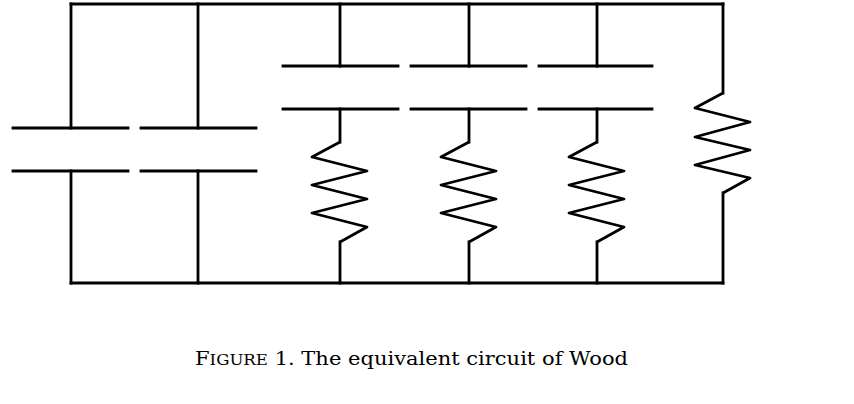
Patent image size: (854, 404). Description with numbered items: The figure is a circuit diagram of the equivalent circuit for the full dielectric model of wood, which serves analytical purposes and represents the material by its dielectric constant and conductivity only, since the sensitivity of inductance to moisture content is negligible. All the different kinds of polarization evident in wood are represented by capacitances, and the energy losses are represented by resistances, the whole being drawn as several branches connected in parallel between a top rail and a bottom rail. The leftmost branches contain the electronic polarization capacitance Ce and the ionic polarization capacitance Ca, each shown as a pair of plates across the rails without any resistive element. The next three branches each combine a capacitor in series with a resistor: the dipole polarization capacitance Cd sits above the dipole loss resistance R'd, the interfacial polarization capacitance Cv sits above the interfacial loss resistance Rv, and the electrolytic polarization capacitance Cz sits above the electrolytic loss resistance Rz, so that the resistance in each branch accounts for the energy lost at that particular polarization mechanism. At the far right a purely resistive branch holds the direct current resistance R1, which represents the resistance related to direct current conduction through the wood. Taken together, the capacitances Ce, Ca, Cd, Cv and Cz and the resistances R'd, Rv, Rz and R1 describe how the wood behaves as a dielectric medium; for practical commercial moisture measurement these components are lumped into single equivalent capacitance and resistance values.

The electronic polarization capacitance Ce is at (70, 127).
The ionic polarization capacitance Ca is at (198, 127).
The dipole polarization capacitance Cd is at (340, 67).
The interfacial polarization capacitance Cv is at (468, 67).
The electrolytic polarization capacitance Cz is at (595, 67).
The dipole loss resistance R'd is at (369, 202).
The interfacial loss resistance Rv is at (498, 202).
The electrolytic loss resistance Rz is at (625, 202).
The direct current resistance R1 is at (753, 143).